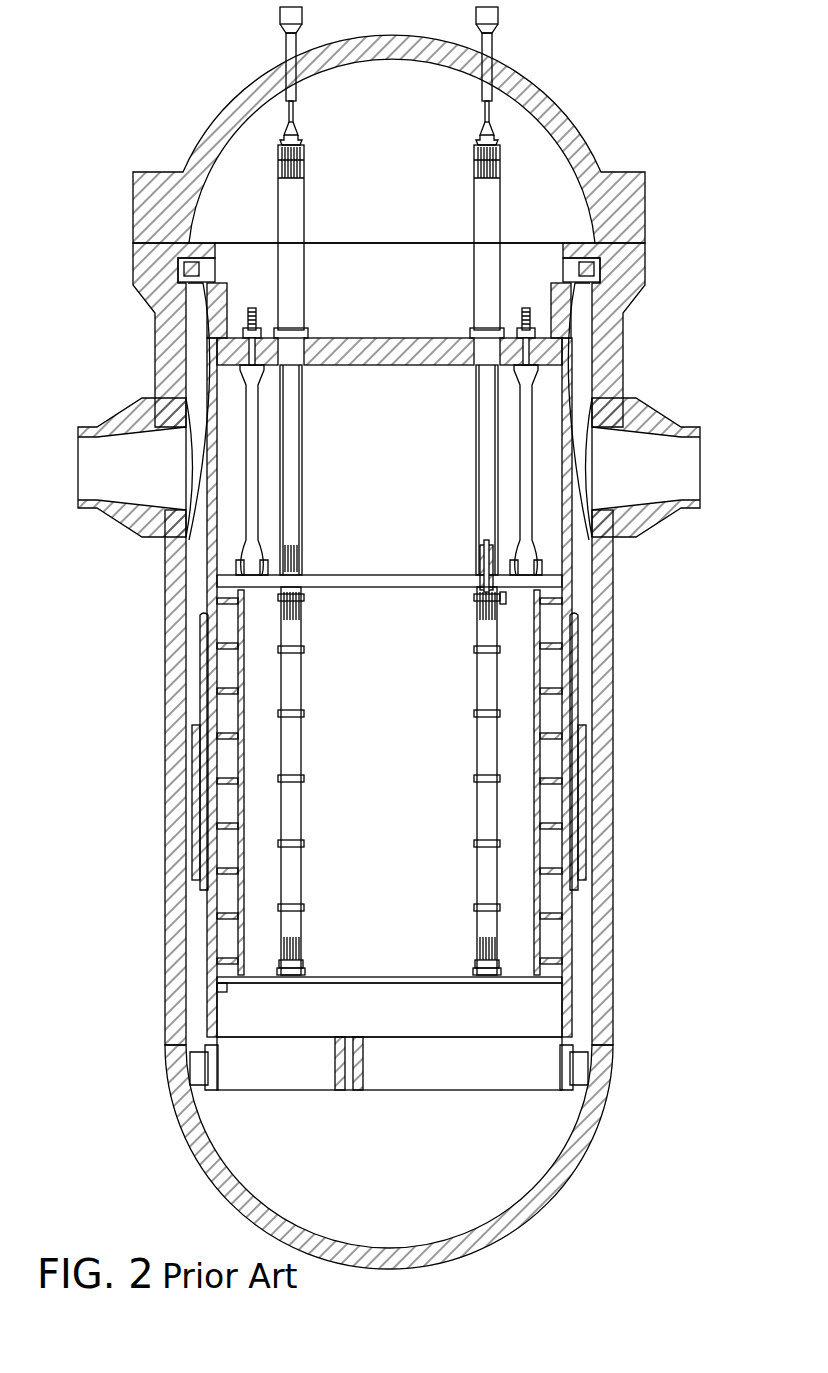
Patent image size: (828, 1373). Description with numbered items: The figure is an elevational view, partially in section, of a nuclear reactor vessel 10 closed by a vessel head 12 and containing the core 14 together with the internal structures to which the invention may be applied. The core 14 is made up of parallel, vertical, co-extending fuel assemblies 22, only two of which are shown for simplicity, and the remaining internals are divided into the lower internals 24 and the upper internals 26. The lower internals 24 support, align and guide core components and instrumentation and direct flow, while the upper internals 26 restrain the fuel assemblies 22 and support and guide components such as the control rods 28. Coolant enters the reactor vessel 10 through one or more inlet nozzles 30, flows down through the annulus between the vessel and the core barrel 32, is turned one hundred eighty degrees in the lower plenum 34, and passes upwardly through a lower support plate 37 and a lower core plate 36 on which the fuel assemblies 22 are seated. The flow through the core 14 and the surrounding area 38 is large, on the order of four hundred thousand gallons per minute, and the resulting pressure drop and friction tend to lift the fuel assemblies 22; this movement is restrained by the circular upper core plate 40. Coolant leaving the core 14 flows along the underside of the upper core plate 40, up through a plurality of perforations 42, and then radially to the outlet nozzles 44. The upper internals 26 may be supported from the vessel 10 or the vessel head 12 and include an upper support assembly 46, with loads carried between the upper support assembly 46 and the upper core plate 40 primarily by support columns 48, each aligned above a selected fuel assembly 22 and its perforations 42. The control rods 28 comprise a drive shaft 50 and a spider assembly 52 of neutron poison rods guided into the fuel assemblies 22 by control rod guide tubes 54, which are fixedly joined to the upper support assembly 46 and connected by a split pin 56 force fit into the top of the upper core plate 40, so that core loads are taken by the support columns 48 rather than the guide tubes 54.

The reactor vessel 10 is at (622, 650).
The vessel head 12 is at (648, 210).
The core 14 is at (408, 770).
The fuel assemblies 22 is at (300, 690).
The lower internals 24 is at (408, 1020).
The upper internals 26 is at (408, 444).
The control rods 28 is at (470, 600).
The inlet nozzles 30 is at (120, 405).
The core barrel 32 is at (210, 572).
The lower plenum 34 is at (555, 1143).
The lower core plate 36 is at (445, 975).
The lower support plate 37 is at (435, 1078).
The surrounding area 38 is at (442, 748).
The upper core plate 40 is at (430, 590).
The perforations 42 is at (348, 578).
The outlet nozzles 44 is at (668, 405).
The upper support assembly 46 is at (572, 245).
The support columns 48 is at (520, 422).
The drive shaft 50 is at (479, 568).
The spider assembly 52 is at (478, 583).
The control rod guide tubes 54 is at (303, 403).
The split pin 56 is at (502, 598).